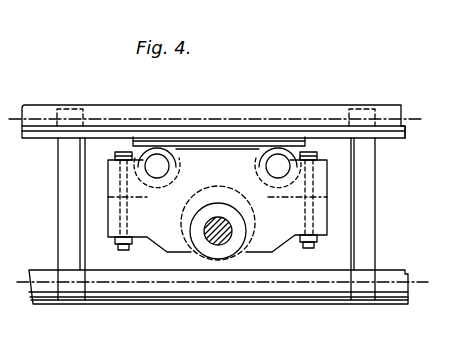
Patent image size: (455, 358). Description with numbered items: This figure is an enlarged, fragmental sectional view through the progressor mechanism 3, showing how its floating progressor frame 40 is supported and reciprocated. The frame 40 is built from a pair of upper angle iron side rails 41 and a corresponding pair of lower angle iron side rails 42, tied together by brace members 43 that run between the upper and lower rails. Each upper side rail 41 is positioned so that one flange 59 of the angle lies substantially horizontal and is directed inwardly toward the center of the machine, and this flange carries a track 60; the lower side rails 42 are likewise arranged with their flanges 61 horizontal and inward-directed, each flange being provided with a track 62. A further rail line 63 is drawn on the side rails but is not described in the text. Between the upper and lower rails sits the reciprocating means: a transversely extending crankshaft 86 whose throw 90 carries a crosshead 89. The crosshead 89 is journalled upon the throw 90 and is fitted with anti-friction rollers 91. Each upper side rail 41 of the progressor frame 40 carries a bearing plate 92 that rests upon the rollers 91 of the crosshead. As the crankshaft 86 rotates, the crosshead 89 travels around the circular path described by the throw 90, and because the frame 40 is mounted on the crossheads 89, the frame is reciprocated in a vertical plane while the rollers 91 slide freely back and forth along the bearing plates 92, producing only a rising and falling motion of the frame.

The progressor mechanism 3 is at (96, 116).
The progressor frame 40 is at (307, 100).
The upper angle iron side rails 41 is at (250, 110).
The lower angle iron side rails 42 is at (390, 272).
The brace members 43 is at (62, 228).
The flange 59 is at (388, 139).
The track 60 is at (330, 130).
The flanges 61 is at (245, 303).
The track 62 is at (296, 296).
The rail web 63 is at (205, 120).
The crankshaft 86 is at (218, 200).
The crossheads 89 is at (318, 212).
The throw 90 is at (218, 231).
The rollers 91 is at (163, 150).
The bearing plates 92 is at (185, 146).